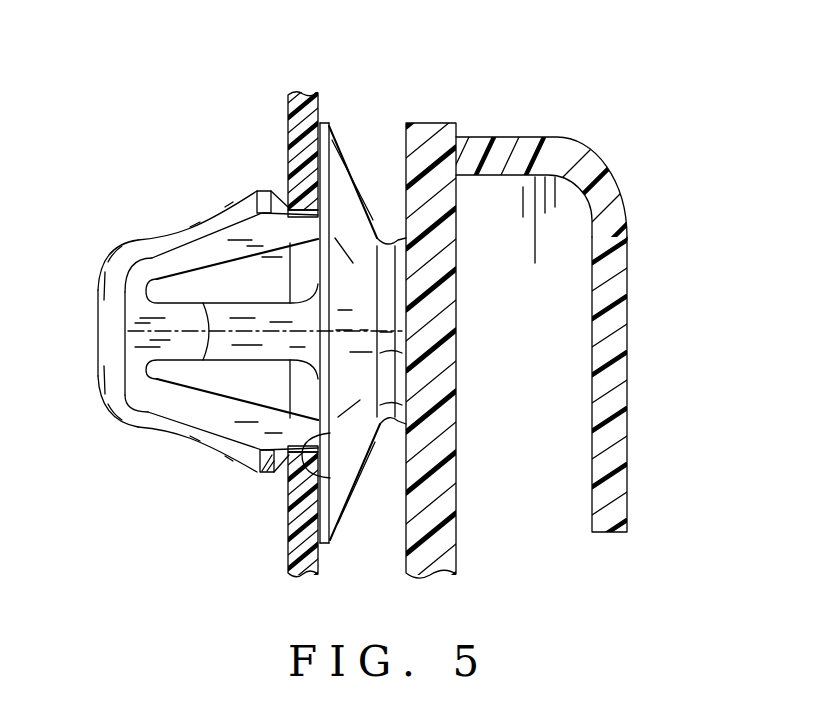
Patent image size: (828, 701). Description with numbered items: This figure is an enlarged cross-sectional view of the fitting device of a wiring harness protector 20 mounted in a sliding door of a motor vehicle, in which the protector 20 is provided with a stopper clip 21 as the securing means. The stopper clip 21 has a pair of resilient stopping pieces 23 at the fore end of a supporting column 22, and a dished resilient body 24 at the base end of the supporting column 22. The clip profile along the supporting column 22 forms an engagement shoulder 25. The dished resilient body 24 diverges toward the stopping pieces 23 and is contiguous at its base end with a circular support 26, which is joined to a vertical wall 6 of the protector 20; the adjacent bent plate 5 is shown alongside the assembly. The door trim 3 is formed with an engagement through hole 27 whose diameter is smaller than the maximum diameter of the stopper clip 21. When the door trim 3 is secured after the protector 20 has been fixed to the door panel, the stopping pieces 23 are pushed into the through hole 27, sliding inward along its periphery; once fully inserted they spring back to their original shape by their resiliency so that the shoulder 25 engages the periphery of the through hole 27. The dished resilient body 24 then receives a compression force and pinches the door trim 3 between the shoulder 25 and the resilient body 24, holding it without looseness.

The door trim 3 is at (288, 114).
The second panel leg 5 is at (613, 330).
The vertical wall 6 is at (442, 329).
The wiring harness protector 20 is at (597, 314).
The stopper clip 21 is at (228, 342).
The supporting column 22 is at (250, 340).
The resilient stopping piece 23 is at (210, 212).
The dished resilient body 24 is at (373, 335).
The engagement shoulder 25 is at (282, 194).
The circular support 26 is at (398, 240).
The engagement through hole 27 is at (323, 446).